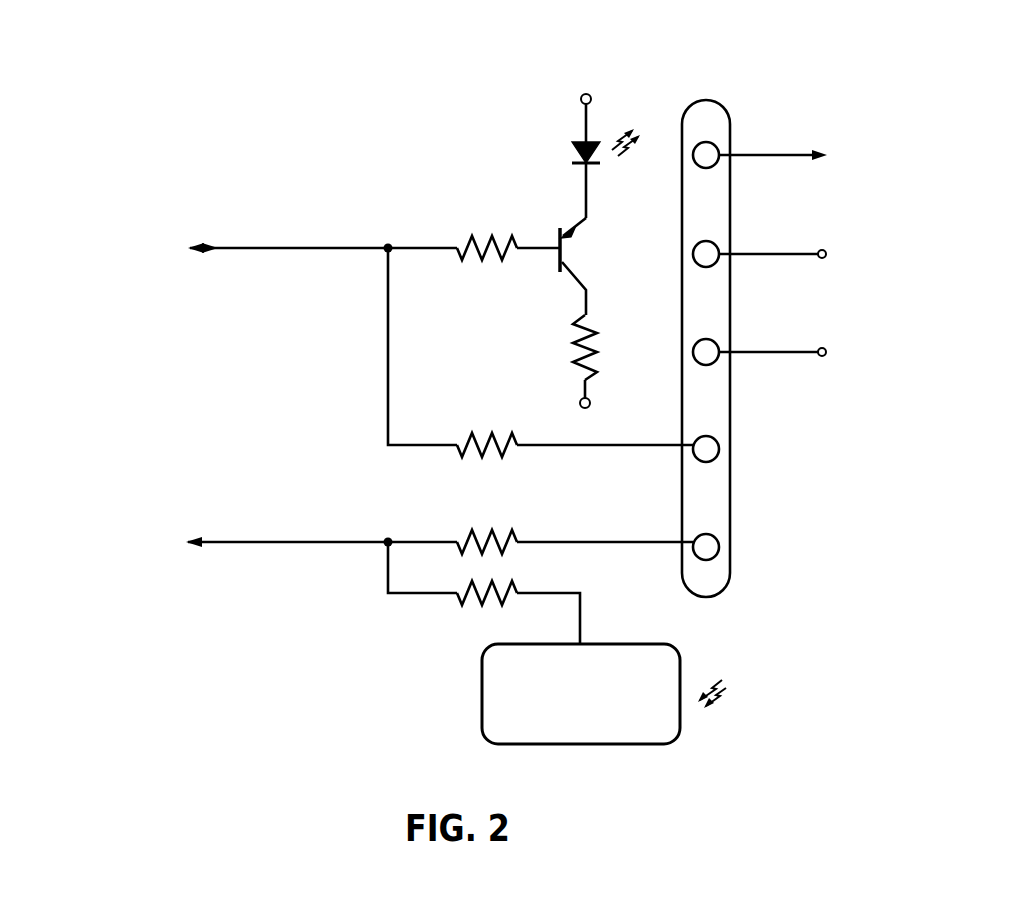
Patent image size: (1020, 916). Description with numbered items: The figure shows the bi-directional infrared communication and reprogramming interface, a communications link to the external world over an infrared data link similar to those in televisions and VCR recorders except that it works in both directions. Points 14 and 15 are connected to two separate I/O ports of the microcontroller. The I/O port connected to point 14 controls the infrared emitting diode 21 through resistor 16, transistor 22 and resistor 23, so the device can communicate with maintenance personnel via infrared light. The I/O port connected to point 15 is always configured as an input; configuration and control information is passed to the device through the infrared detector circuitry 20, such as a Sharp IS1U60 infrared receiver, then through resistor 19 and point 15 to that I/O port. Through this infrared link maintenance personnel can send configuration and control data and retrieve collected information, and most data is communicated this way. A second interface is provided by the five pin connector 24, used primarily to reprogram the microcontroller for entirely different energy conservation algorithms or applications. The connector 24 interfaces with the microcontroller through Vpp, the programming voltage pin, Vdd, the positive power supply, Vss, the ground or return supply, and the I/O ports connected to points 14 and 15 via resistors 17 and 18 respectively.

The point 14 is at (197, 246).
The point 15 is at (193, 540).
The resistor 16 is at (488, 238).
The resistor 17 is at (490, 440).
The resistor 18 is at (490, 535).
The resistor 19 is at (470, 608).
The infrared detector circuitry 20 is at (482, 693).
The infrared emitting diode 21 is at (575, 152).
The transistor 22 is at (570, 252).
The resistor 23 is at (575, 343).
The five pin connector 24 is at (705, 100).